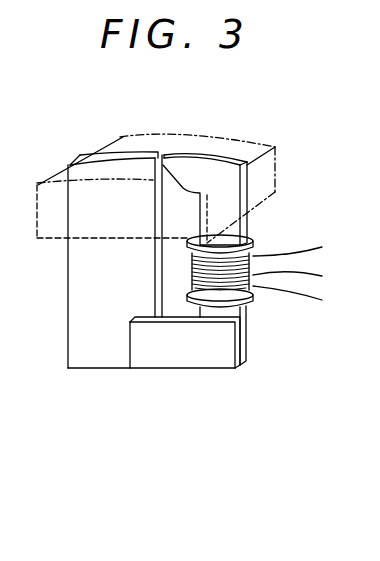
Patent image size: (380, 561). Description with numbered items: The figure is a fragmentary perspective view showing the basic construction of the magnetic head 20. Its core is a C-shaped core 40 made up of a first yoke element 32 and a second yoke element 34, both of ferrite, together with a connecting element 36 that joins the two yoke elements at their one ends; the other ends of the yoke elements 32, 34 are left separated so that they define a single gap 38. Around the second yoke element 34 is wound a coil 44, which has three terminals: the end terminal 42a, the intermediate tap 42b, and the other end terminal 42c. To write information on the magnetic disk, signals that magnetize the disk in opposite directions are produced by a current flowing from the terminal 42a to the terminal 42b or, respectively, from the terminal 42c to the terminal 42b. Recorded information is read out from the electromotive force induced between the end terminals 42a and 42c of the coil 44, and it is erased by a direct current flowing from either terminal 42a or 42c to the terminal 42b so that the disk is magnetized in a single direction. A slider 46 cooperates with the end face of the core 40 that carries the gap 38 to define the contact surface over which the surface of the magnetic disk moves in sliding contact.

The magnetic head 20 is at (231, 393).
The first yoke element 32 is at (77, 287).
The second yoke element 34 is at (247, 186).
The connecting element 36 is at (182, 358).
The gap 38 is at (163, 157).
The C-shaped core 40 is at (107, 374).
The terminal 42a is at (315, 245).
The terminal (intermediate tap) 42b is at (315, 274).
The terminal 42c is at (314, 300).
The coil 44 is at (256, 297).
The slider 46 is at (120, 140).